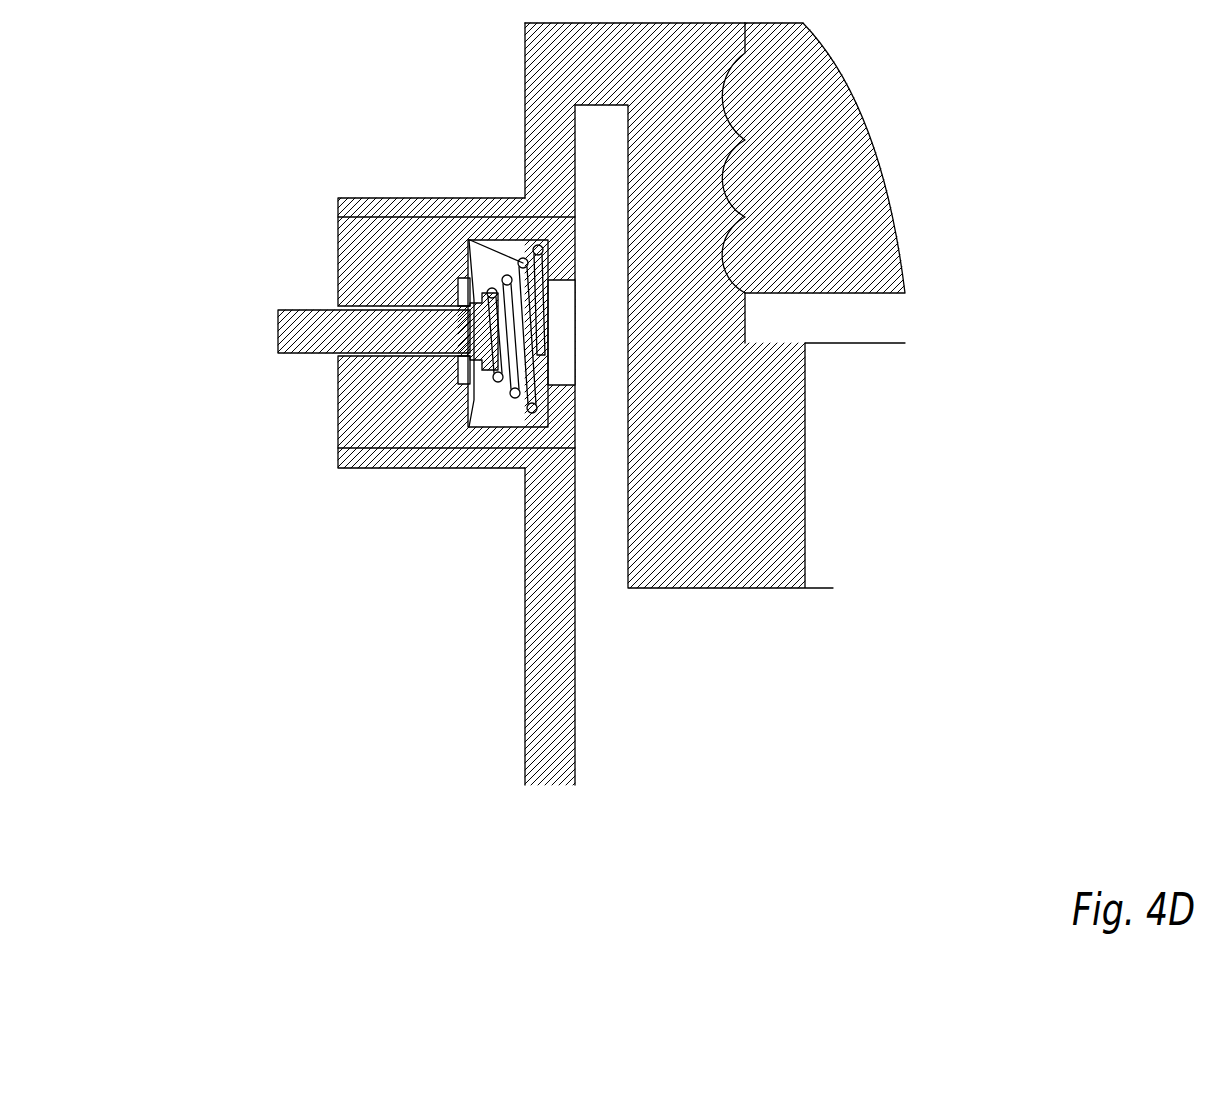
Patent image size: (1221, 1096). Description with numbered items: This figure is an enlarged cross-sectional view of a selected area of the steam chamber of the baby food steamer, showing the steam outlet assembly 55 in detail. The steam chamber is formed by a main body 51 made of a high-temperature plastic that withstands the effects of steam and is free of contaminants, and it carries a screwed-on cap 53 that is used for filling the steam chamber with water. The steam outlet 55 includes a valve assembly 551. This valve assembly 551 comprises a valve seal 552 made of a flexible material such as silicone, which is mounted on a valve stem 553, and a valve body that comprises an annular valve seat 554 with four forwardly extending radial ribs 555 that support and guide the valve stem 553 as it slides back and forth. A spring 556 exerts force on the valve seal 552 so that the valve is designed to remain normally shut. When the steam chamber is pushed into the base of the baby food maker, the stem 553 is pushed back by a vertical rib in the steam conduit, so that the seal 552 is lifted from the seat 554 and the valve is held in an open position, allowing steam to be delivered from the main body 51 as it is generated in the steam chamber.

The main body 51 is at (553, 683).
The screwed-on cap 53 is at (840, 210).
The steam outlet assembly 55 is at (310, 308).
The valve assembly 551 is at (373, 264).
The valve seal 552 is at (450, 455).
The valve stem 553 is at (322, 335).
The annular valve seat 554 is at (455, 315).
The forwardly extending radial ribs 555 is at (378, 422).
The spring 556 is at (448, 217).